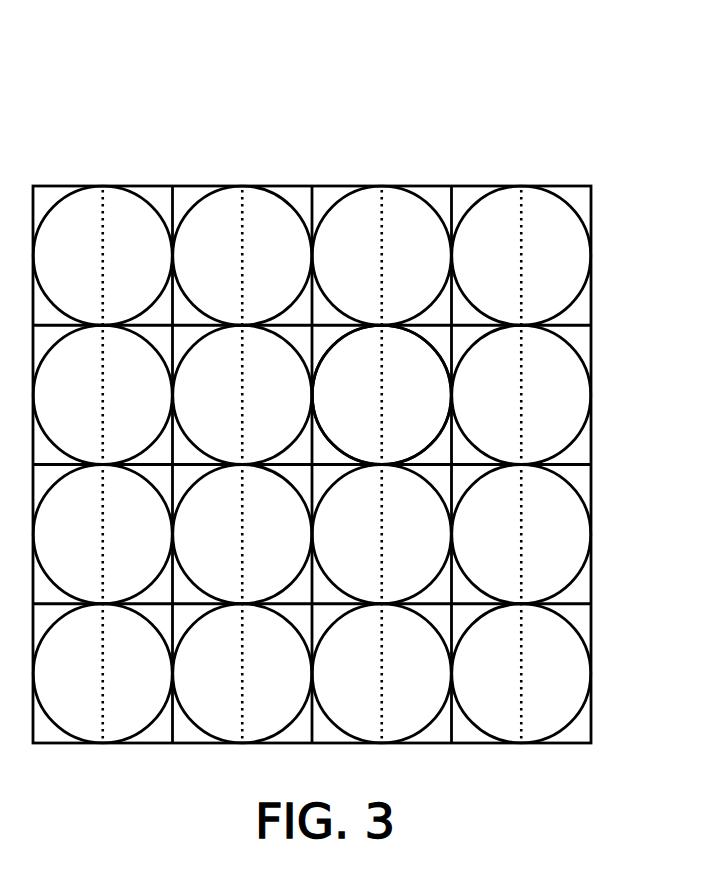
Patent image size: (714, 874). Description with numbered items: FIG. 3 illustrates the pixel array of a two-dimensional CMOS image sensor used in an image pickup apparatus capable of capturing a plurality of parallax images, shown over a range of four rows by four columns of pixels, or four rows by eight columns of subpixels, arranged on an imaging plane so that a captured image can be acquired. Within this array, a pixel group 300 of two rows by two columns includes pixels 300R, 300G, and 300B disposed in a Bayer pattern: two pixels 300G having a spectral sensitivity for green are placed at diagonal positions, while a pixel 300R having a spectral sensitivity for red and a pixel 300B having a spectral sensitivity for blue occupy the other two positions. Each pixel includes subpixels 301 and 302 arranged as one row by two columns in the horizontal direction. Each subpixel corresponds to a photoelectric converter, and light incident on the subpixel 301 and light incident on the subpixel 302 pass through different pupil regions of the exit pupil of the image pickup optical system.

The pixel group 300 is at (467, 97).
The pixel 300R is at (72, 207).
The pixel 300G is at (118, 402).
The pixel 300B is at (285, 377).
The subpixel 301 is at (503, 217).
The subpixel 302 is at (572, 230).